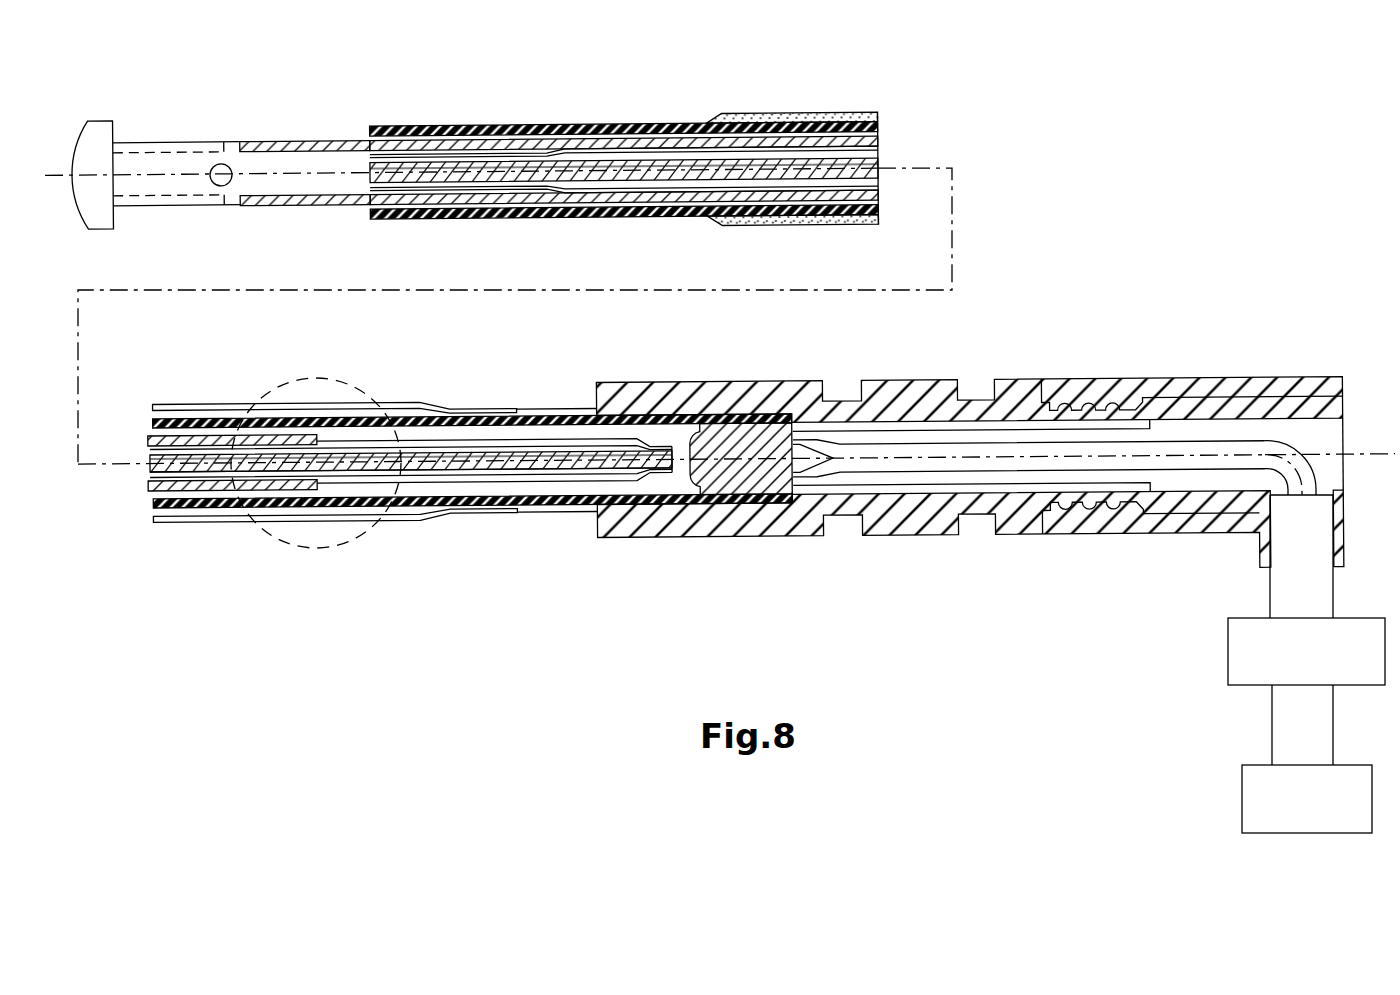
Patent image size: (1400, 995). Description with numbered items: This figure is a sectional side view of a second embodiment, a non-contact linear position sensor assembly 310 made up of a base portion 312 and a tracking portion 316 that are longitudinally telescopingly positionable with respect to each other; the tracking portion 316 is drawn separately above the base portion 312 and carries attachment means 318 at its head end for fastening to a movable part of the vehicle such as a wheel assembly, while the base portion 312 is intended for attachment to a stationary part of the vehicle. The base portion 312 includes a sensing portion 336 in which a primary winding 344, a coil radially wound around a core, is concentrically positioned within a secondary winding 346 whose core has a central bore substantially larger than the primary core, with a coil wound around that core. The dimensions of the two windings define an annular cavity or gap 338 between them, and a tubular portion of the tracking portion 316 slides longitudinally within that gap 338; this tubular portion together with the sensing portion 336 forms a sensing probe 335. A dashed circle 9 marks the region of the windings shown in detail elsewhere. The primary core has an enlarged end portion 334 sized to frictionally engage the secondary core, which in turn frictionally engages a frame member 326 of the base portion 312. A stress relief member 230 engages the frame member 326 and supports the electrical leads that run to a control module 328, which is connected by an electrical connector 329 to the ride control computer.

The detail circle (FIG. 9) 9 is at (341, 381).
The stress relief member 230 is at (1151, 379).
The non-contact linear position sensor assembly 310 is at (578, 123).
The base portion 312 is at (736, 570).
The tracking portion 316 is at (176, 122).
The attachment means 318 is at (113, 122).
The frame member 326 is at (969, 470).
The control module 328 is at (1255, 648).
The electrical connector 329 is at (1257, 803).
The enlarged end portion 334 is at (746, 440).
The sensing probe 335 is at (559, 123).
The sensing portion 336 is at (470, 519).
The annular cavity or gap 338 is at (471, 437).
The primary winding 344 is at (467, 473).
The secondary winding 346 is at (210, 396).